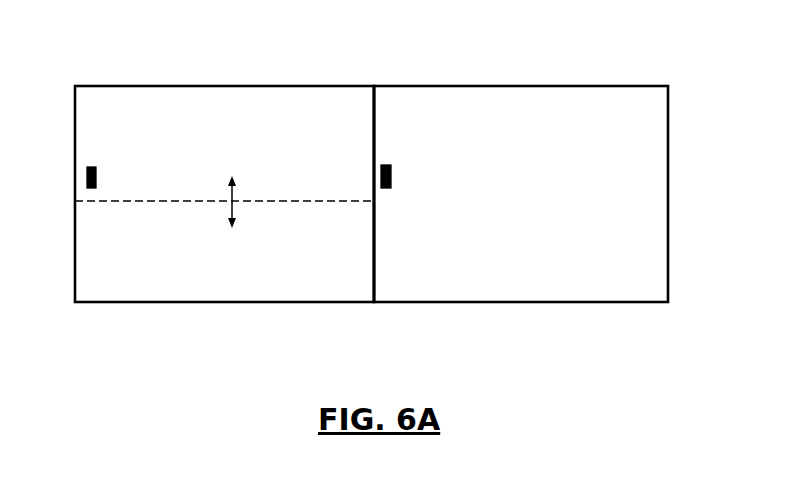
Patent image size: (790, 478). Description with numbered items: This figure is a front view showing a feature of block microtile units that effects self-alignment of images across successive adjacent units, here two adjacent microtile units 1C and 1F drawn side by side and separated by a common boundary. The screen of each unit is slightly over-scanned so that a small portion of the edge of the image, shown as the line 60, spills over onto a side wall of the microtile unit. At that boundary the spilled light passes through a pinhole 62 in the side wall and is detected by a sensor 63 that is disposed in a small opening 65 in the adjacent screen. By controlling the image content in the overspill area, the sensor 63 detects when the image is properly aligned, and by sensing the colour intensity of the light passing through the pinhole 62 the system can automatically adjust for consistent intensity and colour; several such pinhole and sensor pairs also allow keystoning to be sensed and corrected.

The microtile unit 1C is at (167, 281).
The microtile unit 1F is at (455, 288).
The line 60 is at (320, 208).
The pinhole 62 is at (369, 176).
The sensor 63 is at (372, 155).
The small opening 65 is at (392, 162).